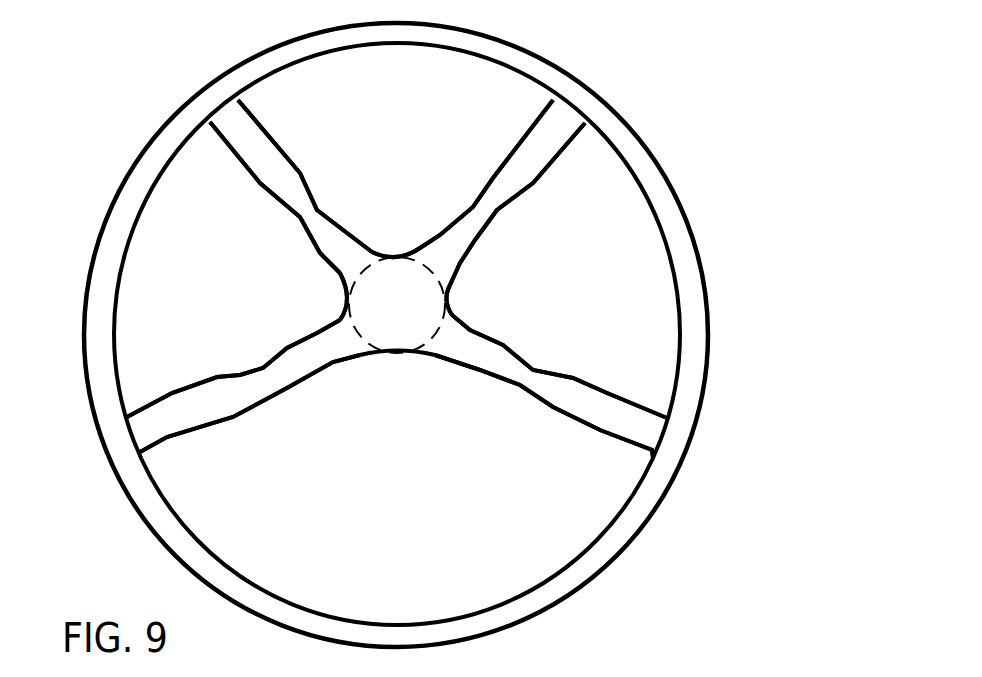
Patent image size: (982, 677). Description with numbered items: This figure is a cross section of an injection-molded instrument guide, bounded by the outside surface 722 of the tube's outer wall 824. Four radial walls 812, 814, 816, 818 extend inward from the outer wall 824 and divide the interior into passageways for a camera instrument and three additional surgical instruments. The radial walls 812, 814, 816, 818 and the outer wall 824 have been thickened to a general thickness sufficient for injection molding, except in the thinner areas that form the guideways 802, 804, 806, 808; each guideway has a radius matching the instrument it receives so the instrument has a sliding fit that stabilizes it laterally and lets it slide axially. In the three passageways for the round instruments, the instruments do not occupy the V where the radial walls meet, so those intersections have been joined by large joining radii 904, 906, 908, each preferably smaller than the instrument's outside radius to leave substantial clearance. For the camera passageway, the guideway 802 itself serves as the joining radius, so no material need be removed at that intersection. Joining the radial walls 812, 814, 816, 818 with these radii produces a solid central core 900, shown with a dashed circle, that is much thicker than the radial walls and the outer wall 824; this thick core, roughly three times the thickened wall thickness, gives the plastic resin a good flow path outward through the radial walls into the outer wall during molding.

The outside surface 722 is at (680, 197).
The guideway 802 is at (272, 392).
The guideway 804 is at (300, 218).
The guideway 806 is at (398, 42).
The guideway 808 is at (673, 247).
The radial wall 812 is at (165, 420).
The radial wall 814 is at (253, 147).
The radial wall 816 is at (547, 140).
The radial wall 818 is at (627, 418).
The outer wall 824 is at (637, 162).
The solid central core 900 is at (397, 305).
The joining radius 904 is at (347, 296).
The joining radius 906 is at (380, 255).
The joining radius 908 is at (450, 294).